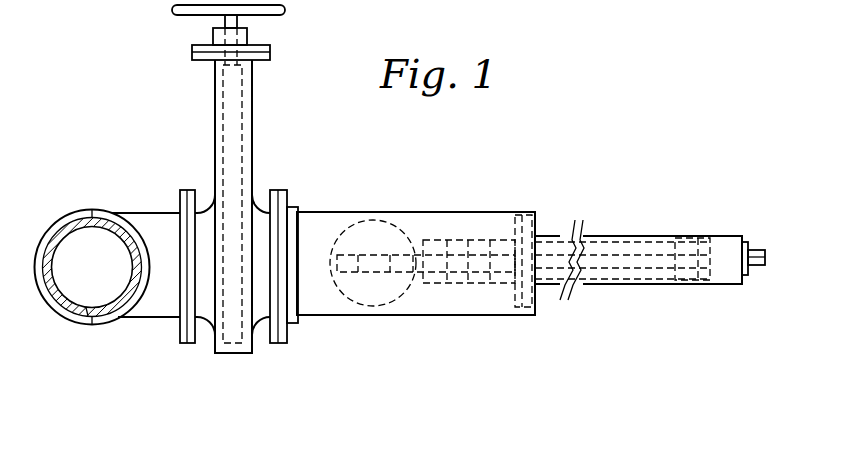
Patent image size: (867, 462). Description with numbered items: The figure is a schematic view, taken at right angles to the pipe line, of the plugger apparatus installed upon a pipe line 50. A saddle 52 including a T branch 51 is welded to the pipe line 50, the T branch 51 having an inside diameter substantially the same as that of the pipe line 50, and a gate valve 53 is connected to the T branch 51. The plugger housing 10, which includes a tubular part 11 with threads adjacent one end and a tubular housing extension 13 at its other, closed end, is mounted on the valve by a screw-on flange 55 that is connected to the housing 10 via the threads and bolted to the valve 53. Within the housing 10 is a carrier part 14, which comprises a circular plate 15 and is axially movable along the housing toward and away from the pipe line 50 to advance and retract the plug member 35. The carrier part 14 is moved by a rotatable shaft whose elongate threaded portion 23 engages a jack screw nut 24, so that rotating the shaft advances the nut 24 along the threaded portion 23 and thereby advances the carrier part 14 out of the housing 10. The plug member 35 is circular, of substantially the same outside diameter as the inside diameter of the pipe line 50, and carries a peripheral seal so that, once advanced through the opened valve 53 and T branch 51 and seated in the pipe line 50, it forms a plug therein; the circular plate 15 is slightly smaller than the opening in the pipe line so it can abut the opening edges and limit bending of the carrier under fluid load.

The plugger housing 10 is at (462, 211).
The tubular part 11 is at (372, 317).
The tubular housing extension 13 is at (660, 288).
The carrier part 14 is at (484, 284).
The circular plate 15 is at (524, 312).
The threaded portion 23 is at (618, 250).
The jack screw nut 24 is at (690, 236).
The plug member 35 is at (407, 293).
The pipe line 50 is at (103, 318).
The T branch 51 is at (153, 313).
The saddle 52 is at (72, 318).
The gate valve 53 is at (310, 315).
The screw-on flange 55 is at (290, 340).